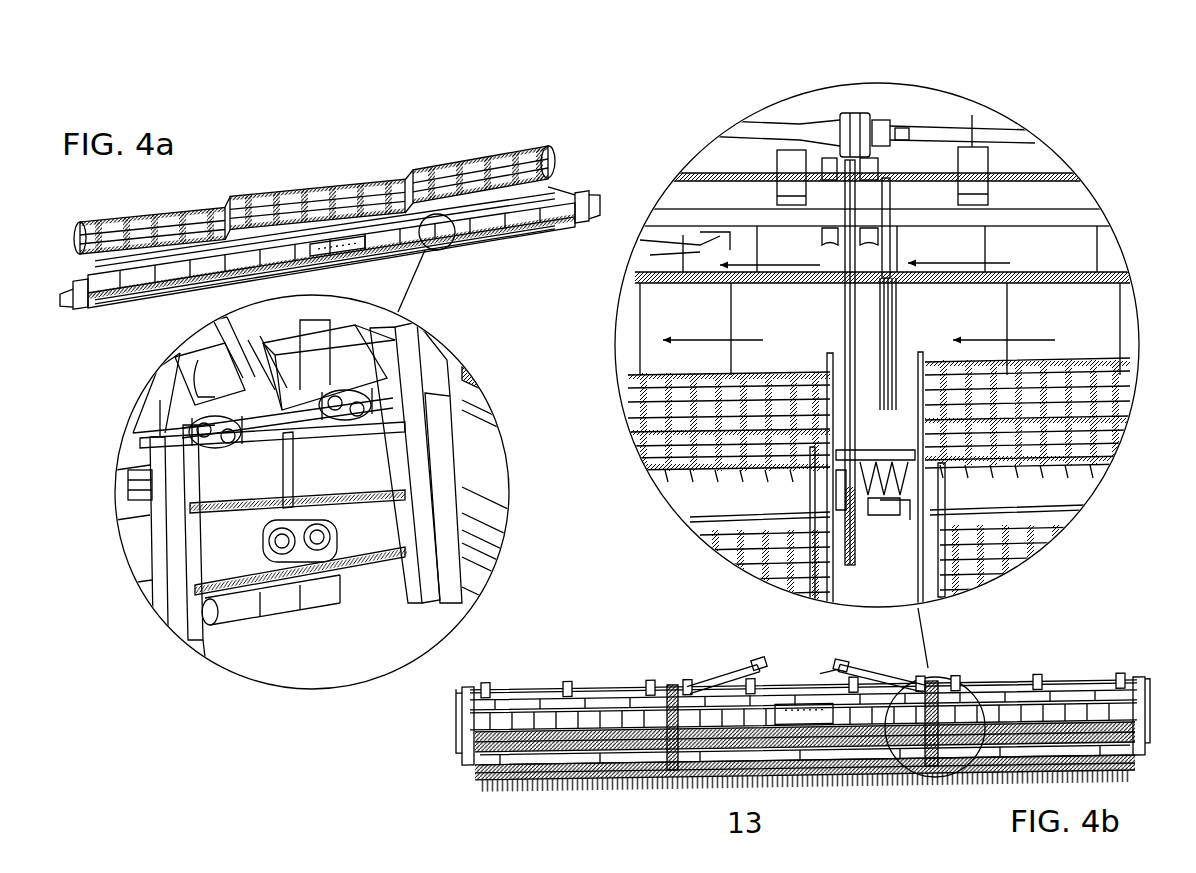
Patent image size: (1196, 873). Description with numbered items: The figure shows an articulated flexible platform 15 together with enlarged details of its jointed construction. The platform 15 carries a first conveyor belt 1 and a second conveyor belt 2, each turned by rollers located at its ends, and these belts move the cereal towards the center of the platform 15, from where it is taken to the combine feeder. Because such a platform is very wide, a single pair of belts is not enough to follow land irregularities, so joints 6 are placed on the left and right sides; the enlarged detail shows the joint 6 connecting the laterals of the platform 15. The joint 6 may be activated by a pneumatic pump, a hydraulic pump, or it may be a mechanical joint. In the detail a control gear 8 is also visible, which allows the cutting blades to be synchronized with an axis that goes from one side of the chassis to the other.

In FIG. 4B, the first conveyor belt 1 is at (777, 317).
In FIG. 4B, the second conveyor belt 2 is at (788, 250).
In FIG. 4A, the joint 6 is at (283, 487).
In FIG. 4B, the joint 6 is at (890, 200).
In FIG. 4A, the control gear 8 is at (307, 418).
In FIG. 4A, the platform 15 is at (275, 240).
In FIG. 4B, the platform 15 is at (1060, 692).